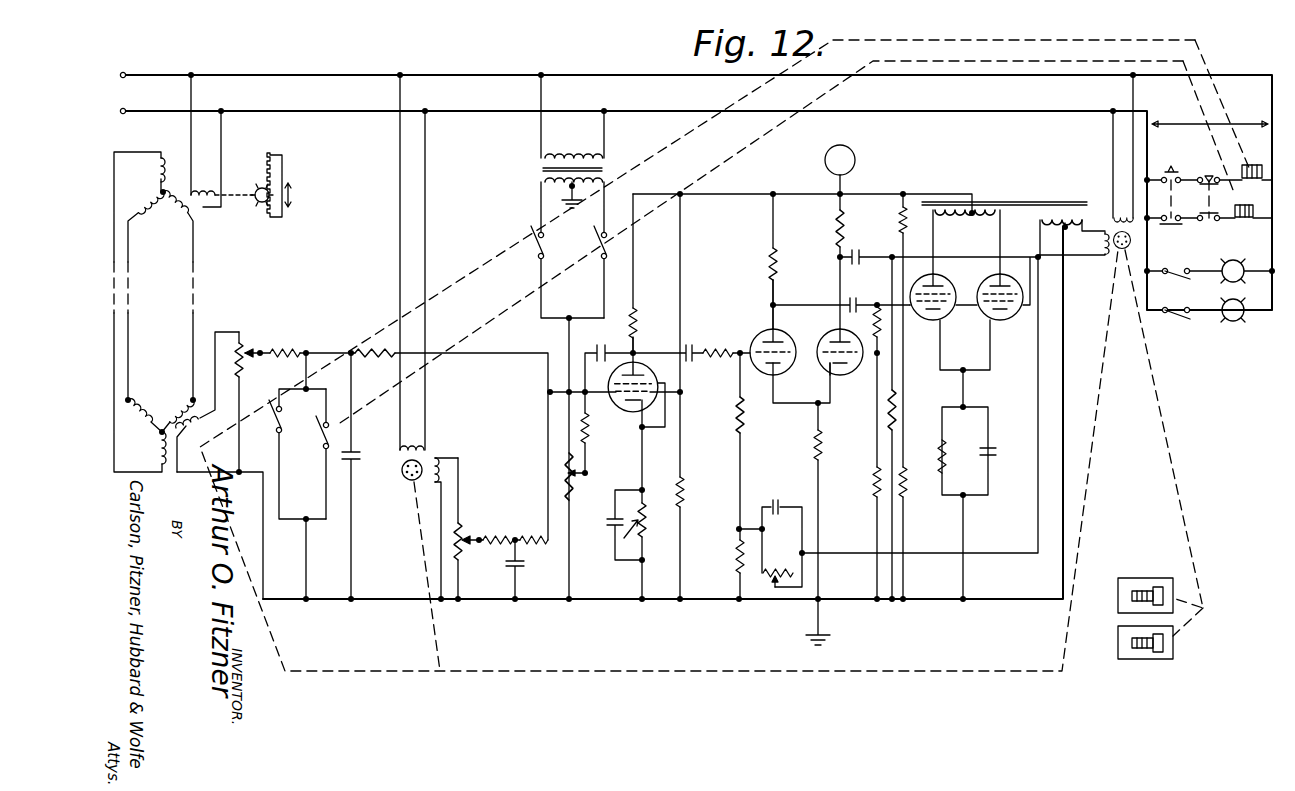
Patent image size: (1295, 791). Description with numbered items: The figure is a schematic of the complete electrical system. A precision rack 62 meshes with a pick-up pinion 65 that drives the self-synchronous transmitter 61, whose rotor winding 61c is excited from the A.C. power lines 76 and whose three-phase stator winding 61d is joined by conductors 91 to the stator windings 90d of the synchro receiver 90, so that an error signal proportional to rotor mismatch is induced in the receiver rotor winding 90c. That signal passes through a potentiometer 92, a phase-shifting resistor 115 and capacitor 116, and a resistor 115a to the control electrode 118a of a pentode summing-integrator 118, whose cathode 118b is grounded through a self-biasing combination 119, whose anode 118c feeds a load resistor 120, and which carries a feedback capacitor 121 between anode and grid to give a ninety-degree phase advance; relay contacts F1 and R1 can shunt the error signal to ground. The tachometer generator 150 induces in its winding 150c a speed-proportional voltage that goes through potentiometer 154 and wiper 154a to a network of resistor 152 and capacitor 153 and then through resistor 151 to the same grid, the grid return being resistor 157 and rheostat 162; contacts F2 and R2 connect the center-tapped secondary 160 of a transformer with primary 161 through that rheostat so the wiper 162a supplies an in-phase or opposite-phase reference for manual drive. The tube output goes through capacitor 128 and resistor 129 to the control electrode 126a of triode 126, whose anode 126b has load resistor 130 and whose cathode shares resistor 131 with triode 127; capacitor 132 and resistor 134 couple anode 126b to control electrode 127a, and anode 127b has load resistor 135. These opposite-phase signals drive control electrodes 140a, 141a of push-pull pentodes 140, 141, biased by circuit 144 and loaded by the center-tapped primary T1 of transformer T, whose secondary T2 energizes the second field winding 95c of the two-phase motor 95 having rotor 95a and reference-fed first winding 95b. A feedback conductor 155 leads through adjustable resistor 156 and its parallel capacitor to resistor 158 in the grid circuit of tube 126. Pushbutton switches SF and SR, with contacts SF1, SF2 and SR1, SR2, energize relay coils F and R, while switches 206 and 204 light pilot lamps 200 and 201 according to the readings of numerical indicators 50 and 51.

The A.C. power lines 76 is at (262, 76).
The transmitter device 61 is at (163, 211).
The three-phase stator winding 61d is at (158, 196).
The rotor winding 61c is at (191, 195).
The pick-up pinion 65 is at (256, 191).
The precision rack 62 is at (285, 165).
The conductors 91 is at (190, 280).
The receiver device 90 is at (166, 416).
The three-phase stator windings 90d is at (142, 432).
The rotor winding 90c is at (185, 423).
The potentiometer 92 is at (244, 342).
The resistor 115 is at (290, 344).
The resistor 115a is at (366, 348).
The relay contacts F1 is at (272, 420).
The relay contacts R1 is at (322, 442).
The capacitor 116 is at (354, 448).
The tachometer generator 150 is at (427, 457).
The second field winding 150c is at (442, 472).
The potentiometer 154 is at (460, 517).
The wiper 154a is at (478, 547).
The resistor 152 is at (492, 534).
The resistor 151 is at (540, 538).
The capacitor 153 is at (518, 565).
The primary winding 161 is at (570, 155).
The center tapped secondary winding 160 is at (534, 180).
The relay contacts F2 is at (540, 252).
The relay contacts R2 is at (600, 260).
The feedback capacitor 121 is at (577, 348).
The anode 118c is at (601, 352).
The pentode amplifier 118 is at (644, 364).
The control electrode 118a is at (620, 412).
The cathode 118b is at (640, 439).
The load resistor 120 is at (636, 308).
The resistor 129 is at (683, 392).
The capacitor 128 is at (688, 344).
The resistor 157 is at (582, 426).
The wiper 162a is at (588, 472).
The rheostat 162 is at (570, 480).
The self-biasing resistor-capacitor combination 119 is at (614, 557).
The triode vacuum tube 126 is at (770, 383).
The anode 126b is at (770, 325).
The control electrode 126a is at (770, 350).
The resistor 158 is at (735, 545).
The resistor 156 is at (776, 568).
The feedback conductor 155 is at (984, 559).
The triode vacuum tube 127 is at (848, 383).
The control electrode 127a is at (820, 370).
The anode 127b is at (835, 304).
The resistor 131 is at (826, 448).
The resistor 134 is at (878, 314).
The load resistor 130 is at (770, 258).
The load resistor 135 is at (836, 230).
The capacitor 132 is at (866, 288).
The pentode amplifier 140 is at (939, 280).
The control electrode 140a is at (938, 320).
The pentode amplifier 141 is at (1005, 277).
The control electrode 141a is at (990, 326).
The self-biasing circuit 144 is at (972, 446).
The center tapped primary winding T1 is at (981, 209).
The transformer T is at (1022, 196).
The secondary winding T2 is at (1058, 226).
The second field winding 95c is at (1100, 256).
The first field winding 95b is at (1118, 214).
The rotor 95a is at (1132, 244).
The reversible electric motor 95 is at (1117, 262).
The switch SF is at (1172, 170).
The switch SR is at (1206, 176).
The relay coil F is at (1246, 178).
The relay coil R is at (1244, 218).
The switch contacts SF1 is at (1168, 198).
The switch contacts SF2 is at (1168, 228).
The switch contacts SR1 is at (1220, 234).
The switch contacts SR2 is at (1234, 204).
The switch 206 is at (1172, 277).
The switch 204 is at (1178, 321).
The pilot lamp 200 is at (1234, 261).
The pilot lamp 201 is at (1220, 324).
The numerical indicator 50 is at (1142, 576).
The numerical indicator 51 is at (1140, 665).